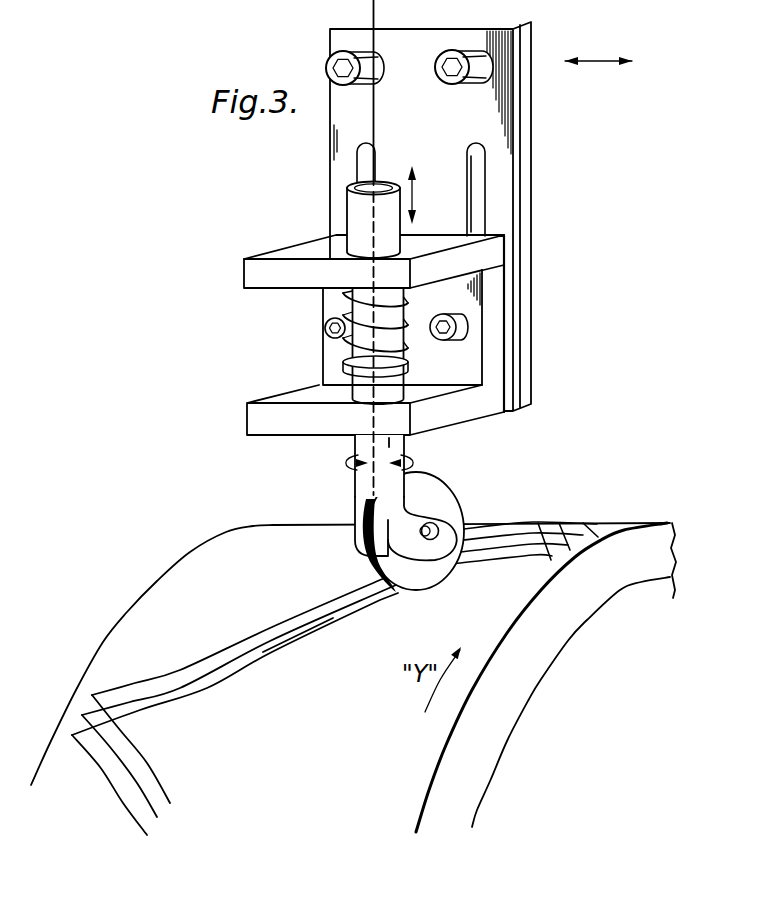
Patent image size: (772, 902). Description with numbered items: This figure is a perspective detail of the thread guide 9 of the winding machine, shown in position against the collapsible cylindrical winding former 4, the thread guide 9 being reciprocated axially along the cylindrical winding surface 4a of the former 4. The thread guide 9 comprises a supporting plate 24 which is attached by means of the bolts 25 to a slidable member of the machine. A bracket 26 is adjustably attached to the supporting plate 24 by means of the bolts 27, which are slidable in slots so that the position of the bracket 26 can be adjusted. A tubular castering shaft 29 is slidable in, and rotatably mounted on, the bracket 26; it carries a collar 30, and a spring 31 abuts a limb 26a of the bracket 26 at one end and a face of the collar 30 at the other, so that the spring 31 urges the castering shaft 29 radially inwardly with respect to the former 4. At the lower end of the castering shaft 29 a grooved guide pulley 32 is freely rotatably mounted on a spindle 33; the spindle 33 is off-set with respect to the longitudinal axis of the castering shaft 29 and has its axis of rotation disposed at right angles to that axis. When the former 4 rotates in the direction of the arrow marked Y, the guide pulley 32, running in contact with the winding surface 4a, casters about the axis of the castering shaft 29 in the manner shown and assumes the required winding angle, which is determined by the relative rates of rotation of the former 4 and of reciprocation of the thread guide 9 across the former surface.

The collapsible cylindrical winding former 4 is at (183, 568).
The winding surface 4a is at (202, 613).
The thread guide 9 is at (324, 170).
The supporting plate 24 is at (522, 185).
The bolts 25 is at (437, 55).
The bracket 26 is at (467, 162).
The limb of the bracket 26a is at (259, 274).
The bolts 27 is at (462, 321).
The tubular castering shaft 29 is at (360, 480).
The collar 30 is at (343, 372).
The spring 31 is at (342, 307).
The grooved guide pulley 32 is at (427, 492).
The spindle 33 is at (433, 528).